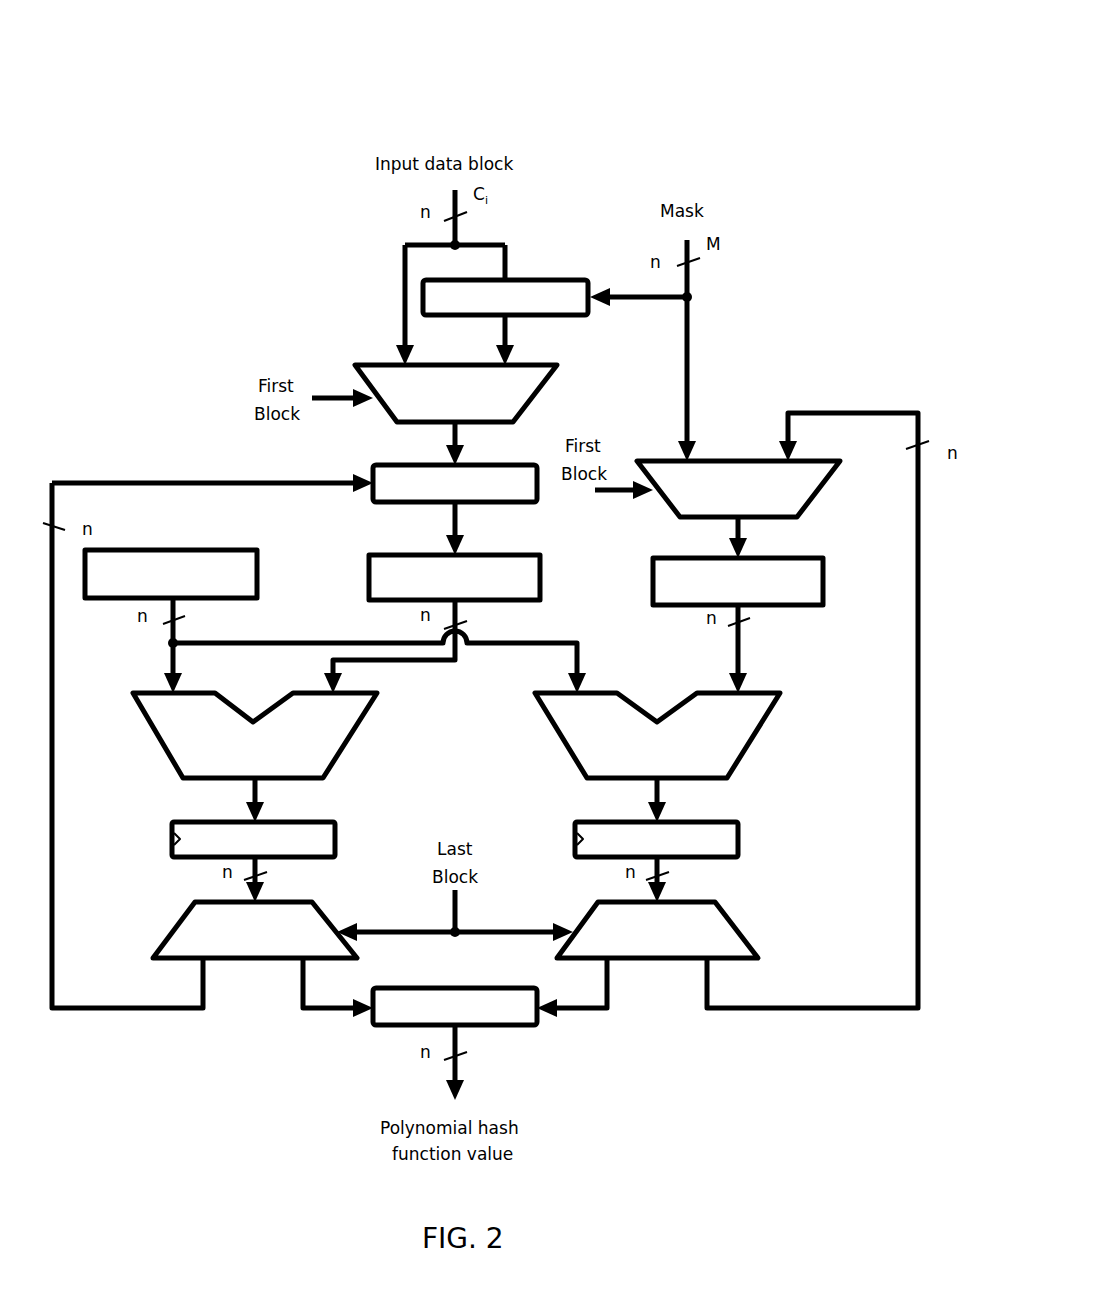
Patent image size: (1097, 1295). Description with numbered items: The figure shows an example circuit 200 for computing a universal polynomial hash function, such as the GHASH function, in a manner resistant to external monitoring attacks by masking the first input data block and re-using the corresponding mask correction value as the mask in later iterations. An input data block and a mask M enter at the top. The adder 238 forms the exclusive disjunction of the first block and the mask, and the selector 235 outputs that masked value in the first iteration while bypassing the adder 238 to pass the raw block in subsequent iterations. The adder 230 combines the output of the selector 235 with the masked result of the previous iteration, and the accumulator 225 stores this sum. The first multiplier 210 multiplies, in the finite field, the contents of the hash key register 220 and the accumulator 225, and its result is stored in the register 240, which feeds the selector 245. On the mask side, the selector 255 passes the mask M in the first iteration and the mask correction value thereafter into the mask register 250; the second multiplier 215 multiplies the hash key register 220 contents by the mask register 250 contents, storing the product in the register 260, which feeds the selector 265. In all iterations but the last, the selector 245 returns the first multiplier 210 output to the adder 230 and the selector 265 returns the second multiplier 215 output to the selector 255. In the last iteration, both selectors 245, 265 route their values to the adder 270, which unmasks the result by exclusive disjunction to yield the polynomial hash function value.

The circuit 200 is at (733, 47).
The adder 238 is at (505, 285).
The selector 235 is at (456, 393).
The adder 230 is at (455, 472).
The accumulator 225 is at (454, 577).
The hash key register 220 is at (171, 574).
The selector 255 is at (738, 489).
The mask register 250 is at (738, 581).
The first multiplier 210 is at (255, 735).
The second multiplier 215 is at (657, 735).
The register 240 is at (253, 839).
The register 260 is at (656, 839).
The selector 245 is at (255, 930).
The selector 265 is at (657, 930).
The adder 270 is at (455, 995).